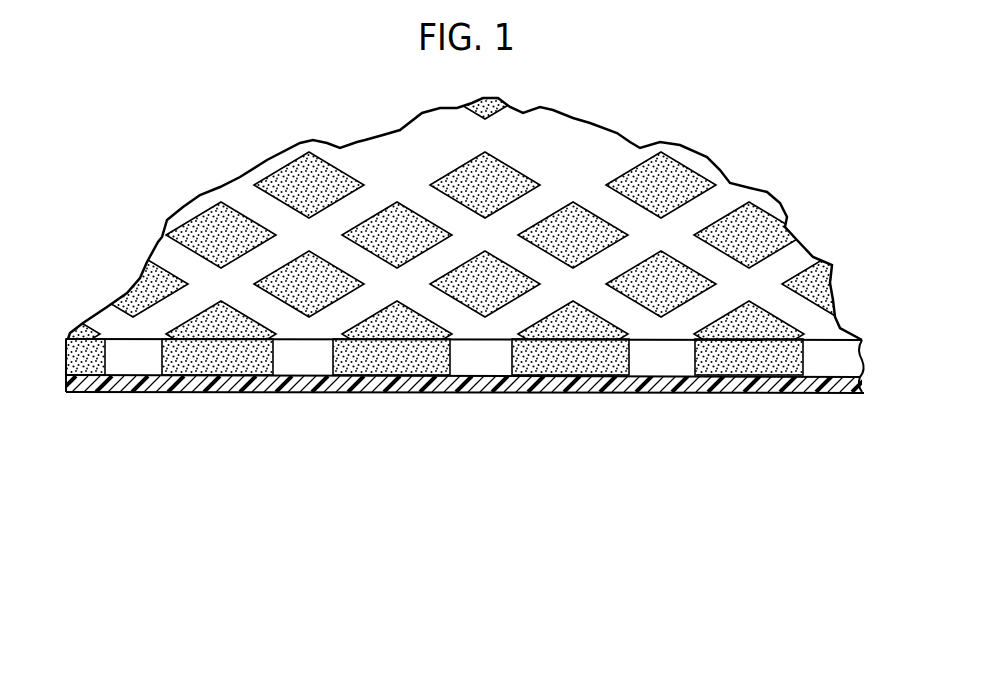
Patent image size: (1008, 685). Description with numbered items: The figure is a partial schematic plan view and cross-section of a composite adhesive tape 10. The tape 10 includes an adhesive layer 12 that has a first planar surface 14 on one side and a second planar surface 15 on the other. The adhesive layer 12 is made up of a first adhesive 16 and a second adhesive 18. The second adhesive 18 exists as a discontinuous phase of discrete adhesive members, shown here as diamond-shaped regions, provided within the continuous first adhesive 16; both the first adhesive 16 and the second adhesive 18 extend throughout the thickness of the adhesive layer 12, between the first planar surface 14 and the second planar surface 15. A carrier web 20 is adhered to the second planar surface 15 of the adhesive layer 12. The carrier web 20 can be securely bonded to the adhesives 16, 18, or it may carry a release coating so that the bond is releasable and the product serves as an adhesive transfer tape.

The adhesive tape 10 is at (718, 98).
The adhesive layer 12 is at (63, 362).
The first planar surface 14 is at (840, 323).
The second planar surface 15 is at (849, 392).
The first adhesive 16 is at (243, 200).
The second adhesive 18 is at (195, 232).
The carrier web 20 is at (410, 392).